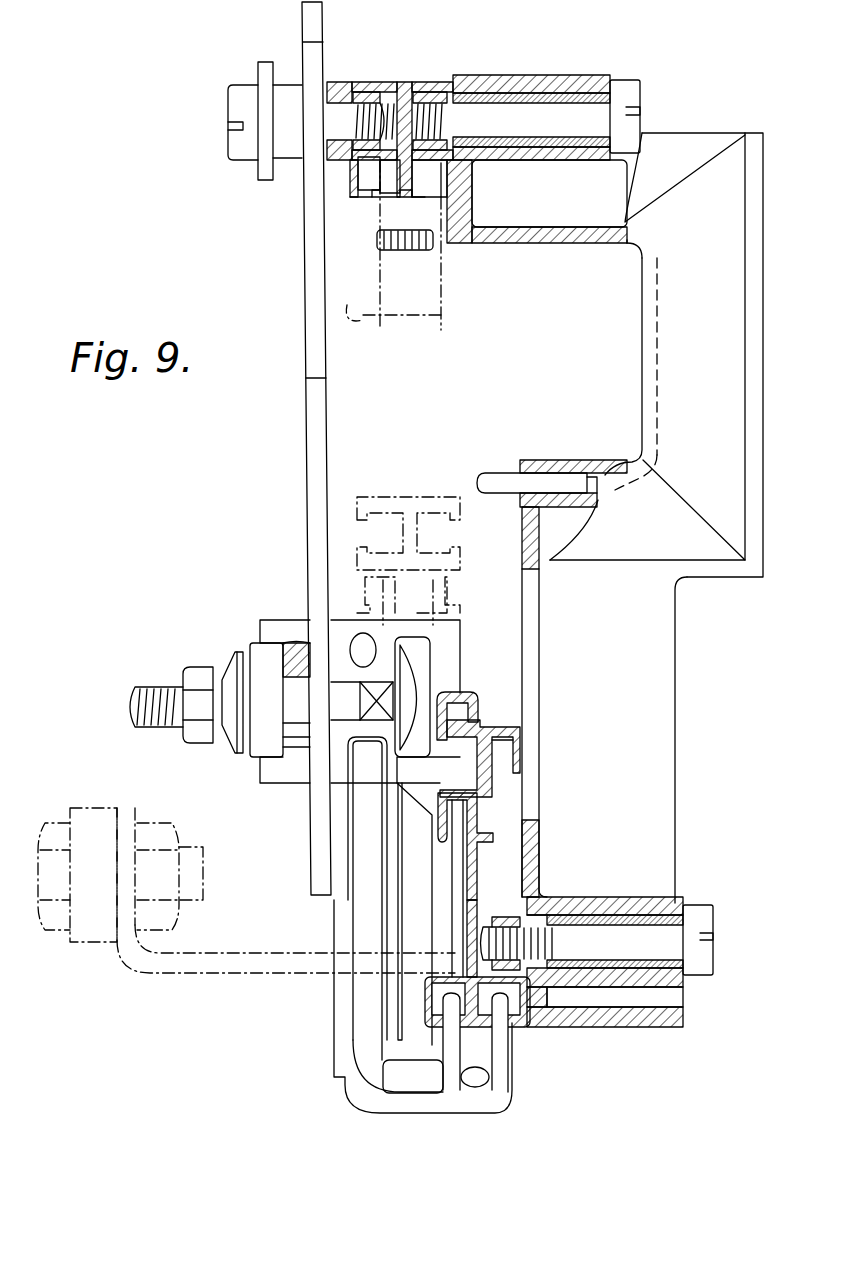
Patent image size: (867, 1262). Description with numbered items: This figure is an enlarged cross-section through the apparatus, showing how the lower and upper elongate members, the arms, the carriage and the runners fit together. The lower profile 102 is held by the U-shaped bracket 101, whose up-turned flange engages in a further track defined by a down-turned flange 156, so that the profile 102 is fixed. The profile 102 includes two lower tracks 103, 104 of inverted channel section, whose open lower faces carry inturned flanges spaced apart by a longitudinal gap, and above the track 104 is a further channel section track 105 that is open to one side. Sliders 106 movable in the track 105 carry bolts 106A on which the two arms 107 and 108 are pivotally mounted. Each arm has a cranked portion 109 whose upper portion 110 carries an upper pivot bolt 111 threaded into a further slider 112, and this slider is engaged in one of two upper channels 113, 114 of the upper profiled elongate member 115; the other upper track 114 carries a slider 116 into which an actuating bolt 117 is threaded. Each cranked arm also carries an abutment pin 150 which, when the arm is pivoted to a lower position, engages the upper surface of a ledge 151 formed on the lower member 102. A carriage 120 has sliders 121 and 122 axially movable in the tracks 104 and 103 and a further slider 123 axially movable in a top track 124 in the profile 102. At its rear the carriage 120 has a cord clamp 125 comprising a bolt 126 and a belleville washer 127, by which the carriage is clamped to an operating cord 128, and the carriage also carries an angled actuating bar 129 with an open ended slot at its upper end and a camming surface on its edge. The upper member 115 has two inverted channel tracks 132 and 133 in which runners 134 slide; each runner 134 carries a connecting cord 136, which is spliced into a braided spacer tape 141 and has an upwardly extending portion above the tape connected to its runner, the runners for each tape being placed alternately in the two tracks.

The U-shaped bracket 101 is at (187, 978).
The profile 102 is at (492, 813).
The lower track 103 is at (435, 988).
The lower track 104 is at (520, 993).
The channel section track 105 is at (560, 882).
The slider 106 is at (497, 917).
The bolt 106A is at (693, 918).
The arm 107 is at (670, 687).
The arm 108 is at (760, 362).
The cranked portion 109 is at (642, 362).
The upper portion 110 is at (512, 246).
The upper pivot bolt 111 is at (620, 95).
The slider 112 is at (428, 97).
The upper channel 113 is at (402, 97).
The upper channel 114 is at (377, 97).
The upper profiled elongate member 115 is at (353, 175).
The slider 116 is at (363, 97).
The actuating bolt 117 is at (286, 83).
The carriage 120 is at (337, 1022).
The slider 121 is at (500, 1030).
The slider 122 is at (413, 1037).
The slider 123 is at (455, 720).
The top track 124 is at (455, 708).
The cord clamp 125 is at (263, 660).
The bolt 126 is at (170, 687).
The belleville washer 127 is at (220, 653).
The operating cord 128 is at (297, 620).
The angled actuating bar 129 is at (317, 527).
The inverted channel track 132 is at (367, 193).
The inverted channel track 133 is at (442, 200).
The runner 134 is at (372, 200).
The connecting cord 136 is at (389, 301).
The braided spacer tape 141 is at (397, 250).
The abutment pin 150 is at (495, 480).
The ledge 151 is at (500, 727).
The down-turned flange 156 is at (440, 820).